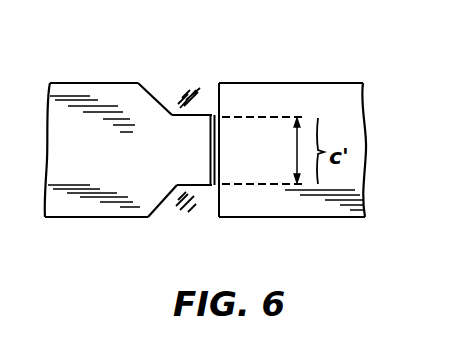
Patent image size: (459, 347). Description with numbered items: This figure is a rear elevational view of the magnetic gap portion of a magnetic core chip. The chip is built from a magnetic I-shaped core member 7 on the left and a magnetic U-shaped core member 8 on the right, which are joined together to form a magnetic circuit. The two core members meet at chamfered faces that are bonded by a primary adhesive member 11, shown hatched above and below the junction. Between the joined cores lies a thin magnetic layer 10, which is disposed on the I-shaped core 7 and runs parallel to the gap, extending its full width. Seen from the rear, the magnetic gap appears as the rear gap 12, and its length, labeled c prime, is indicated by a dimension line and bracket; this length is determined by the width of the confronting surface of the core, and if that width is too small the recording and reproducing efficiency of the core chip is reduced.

The I-shaped core member 7 is at (96, 107).
The U-shaped core member 8 is at (303, 97).
The thin magnetic layer 10 is at (207, 183).
The primary adhesive member 11 is at (182, 95).
The rear gap 12 is at (222, 158).